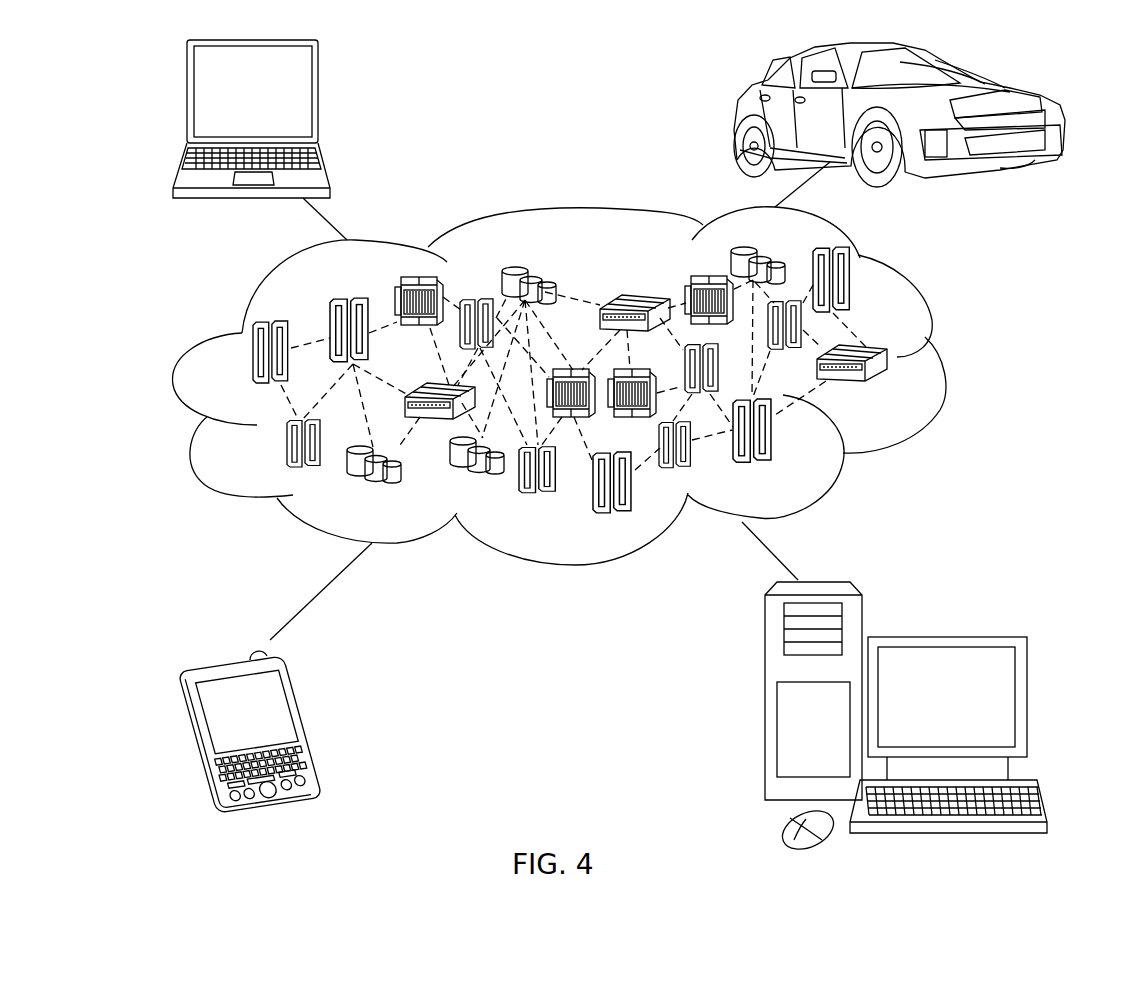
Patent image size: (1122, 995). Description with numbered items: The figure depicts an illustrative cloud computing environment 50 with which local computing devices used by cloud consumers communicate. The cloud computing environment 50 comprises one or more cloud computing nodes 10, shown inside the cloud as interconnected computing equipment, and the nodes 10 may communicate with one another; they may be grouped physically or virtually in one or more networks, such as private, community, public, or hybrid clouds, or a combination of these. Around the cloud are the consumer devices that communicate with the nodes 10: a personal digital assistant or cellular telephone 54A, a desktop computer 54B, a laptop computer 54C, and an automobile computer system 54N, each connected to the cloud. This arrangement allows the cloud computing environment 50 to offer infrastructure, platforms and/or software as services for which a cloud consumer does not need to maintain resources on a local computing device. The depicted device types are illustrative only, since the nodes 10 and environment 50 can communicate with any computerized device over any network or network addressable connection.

The laptop computer 54C is at (317, 99).
The automobile computer system 54N is at (735, 112).
The personal digital assistant (PDA) or cellular telephone 54A is at (312, 726).
The desktop computer 54B is at (945, 637).
The cloud computing environment 50 is at (583, 423).
The cloud computing node 10 is at (888, 389).